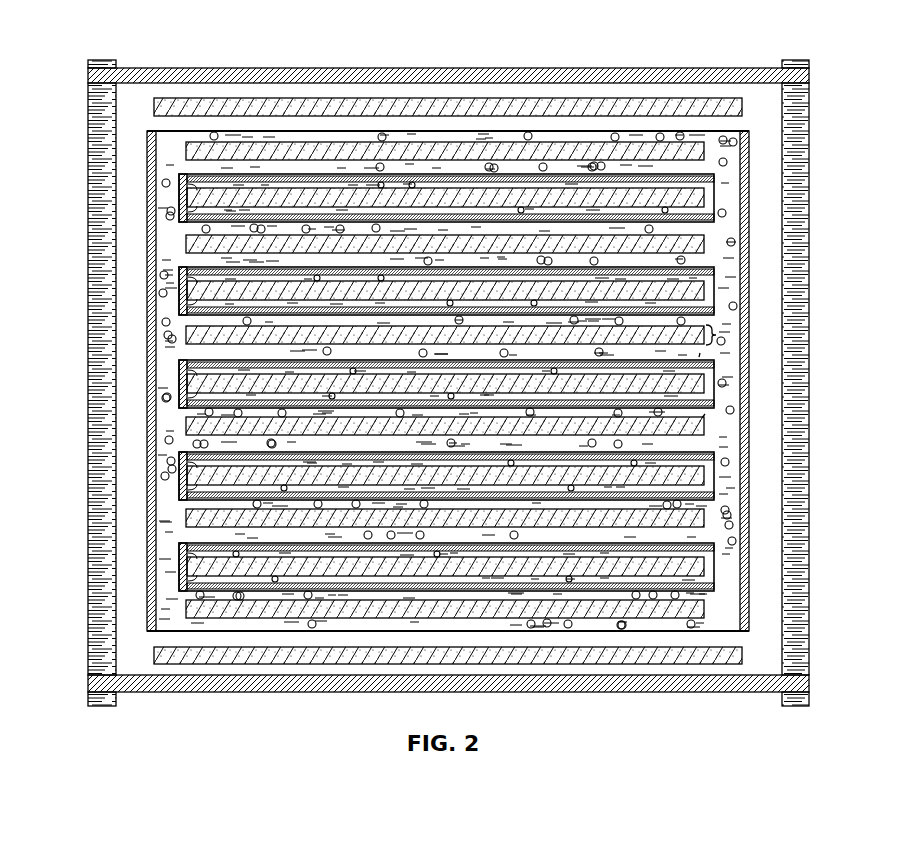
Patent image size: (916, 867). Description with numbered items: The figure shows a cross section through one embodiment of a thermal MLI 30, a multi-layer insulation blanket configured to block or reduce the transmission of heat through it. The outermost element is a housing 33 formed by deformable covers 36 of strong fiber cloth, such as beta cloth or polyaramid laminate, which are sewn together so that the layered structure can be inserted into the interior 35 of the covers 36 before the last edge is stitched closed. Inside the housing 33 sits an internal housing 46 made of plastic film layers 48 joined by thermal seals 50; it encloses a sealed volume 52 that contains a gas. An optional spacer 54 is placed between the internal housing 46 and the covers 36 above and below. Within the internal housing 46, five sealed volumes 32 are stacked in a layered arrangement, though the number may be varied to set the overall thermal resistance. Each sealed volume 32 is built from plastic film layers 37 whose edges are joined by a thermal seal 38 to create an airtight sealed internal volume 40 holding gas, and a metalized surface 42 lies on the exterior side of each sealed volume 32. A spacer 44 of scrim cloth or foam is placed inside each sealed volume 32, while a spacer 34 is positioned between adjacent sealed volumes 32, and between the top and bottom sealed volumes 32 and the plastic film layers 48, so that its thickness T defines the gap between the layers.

The MLI 30 is at (60, 113).
The sealed volume 32 is at (166, 290).
The housing 33 is at (141, 706).
The spacer 34 is at (185, 335).
The interior 35 is at (755, 192).
The cover 36 is at (523, 68).
The plastic film layer 37 is at (183, 187).
The thermal seal 38 is at (175, 567).
The sealed internal volume 40 is at (180, 457).
The metalized surface 42 is at (700, 353).
The spacer 44 is at (700, 288).
The internal housing 46 is at (762, 147).
The plastic film layer 48 is at (735, 128).
The seal 50 is at (749, 622).
The sealed volume 52 is at (733, 254).
The spacer 54 is at (710, 107).
The thickness T is at (718, 335).